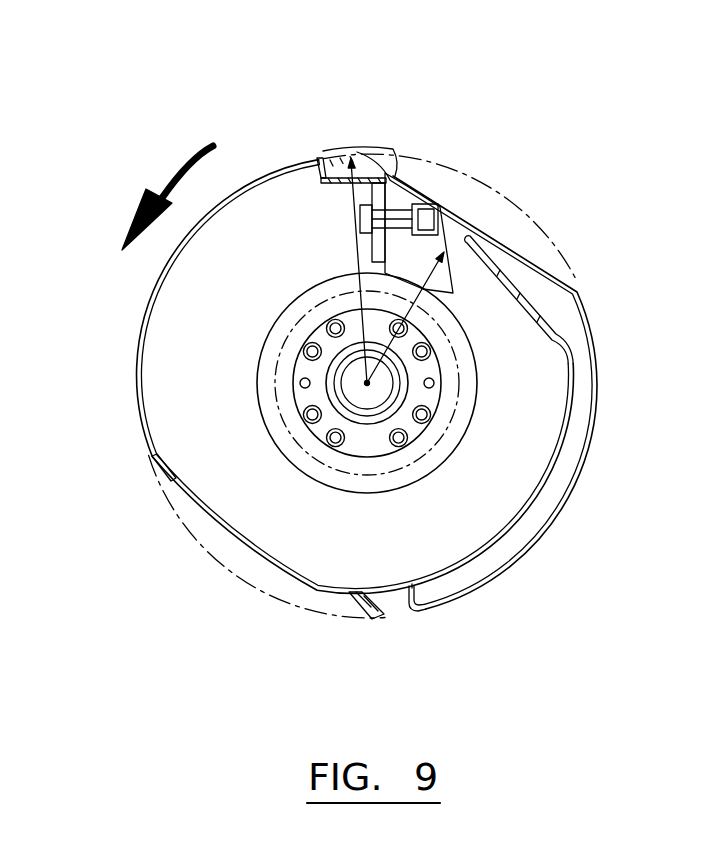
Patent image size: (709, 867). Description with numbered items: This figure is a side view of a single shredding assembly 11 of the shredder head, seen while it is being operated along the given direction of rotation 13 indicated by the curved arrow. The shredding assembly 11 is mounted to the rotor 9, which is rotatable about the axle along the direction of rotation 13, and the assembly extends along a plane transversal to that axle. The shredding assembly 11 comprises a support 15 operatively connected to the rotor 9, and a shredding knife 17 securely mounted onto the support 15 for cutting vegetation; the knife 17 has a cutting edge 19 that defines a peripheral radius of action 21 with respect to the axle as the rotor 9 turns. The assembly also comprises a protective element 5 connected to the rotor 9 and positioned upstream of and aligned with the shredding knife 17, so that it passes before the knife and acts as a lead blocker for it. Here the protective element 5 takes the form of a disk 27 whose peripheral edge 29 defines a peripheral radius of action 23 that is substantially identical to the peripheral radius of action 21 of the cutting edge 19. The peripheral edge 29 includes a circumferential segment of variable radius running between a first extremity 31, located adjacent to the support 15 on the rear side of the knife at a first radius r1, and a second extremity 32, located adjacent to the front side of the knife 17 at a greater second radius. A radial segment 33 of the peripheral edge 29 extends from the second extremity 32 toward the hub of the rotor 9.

The protective element 5 is at (481, 604).
The rotor 9 is at (270, 366).
The shredding assembly 11 is at (139, 565).
The direction of rotation 13 is at (144, 198).
The support 15 is at (466, 283).
The shredding knife 17 is at (388, 144).
The cutting edge 19 is at (352, 154).
The peripheral radius of action 21 is at (400, 156).
The peripheral radius of action 23 is at (345, 298).
The disk 27 is at (166, 422).
The peripheral edge 29 is at (150, 453).
The first extremity 31 is at (569, 270).
The second extremity 32 is at (320, 156).
The radial segment 33 is at (366, 381).
The first radius r1 is at (450, 314).